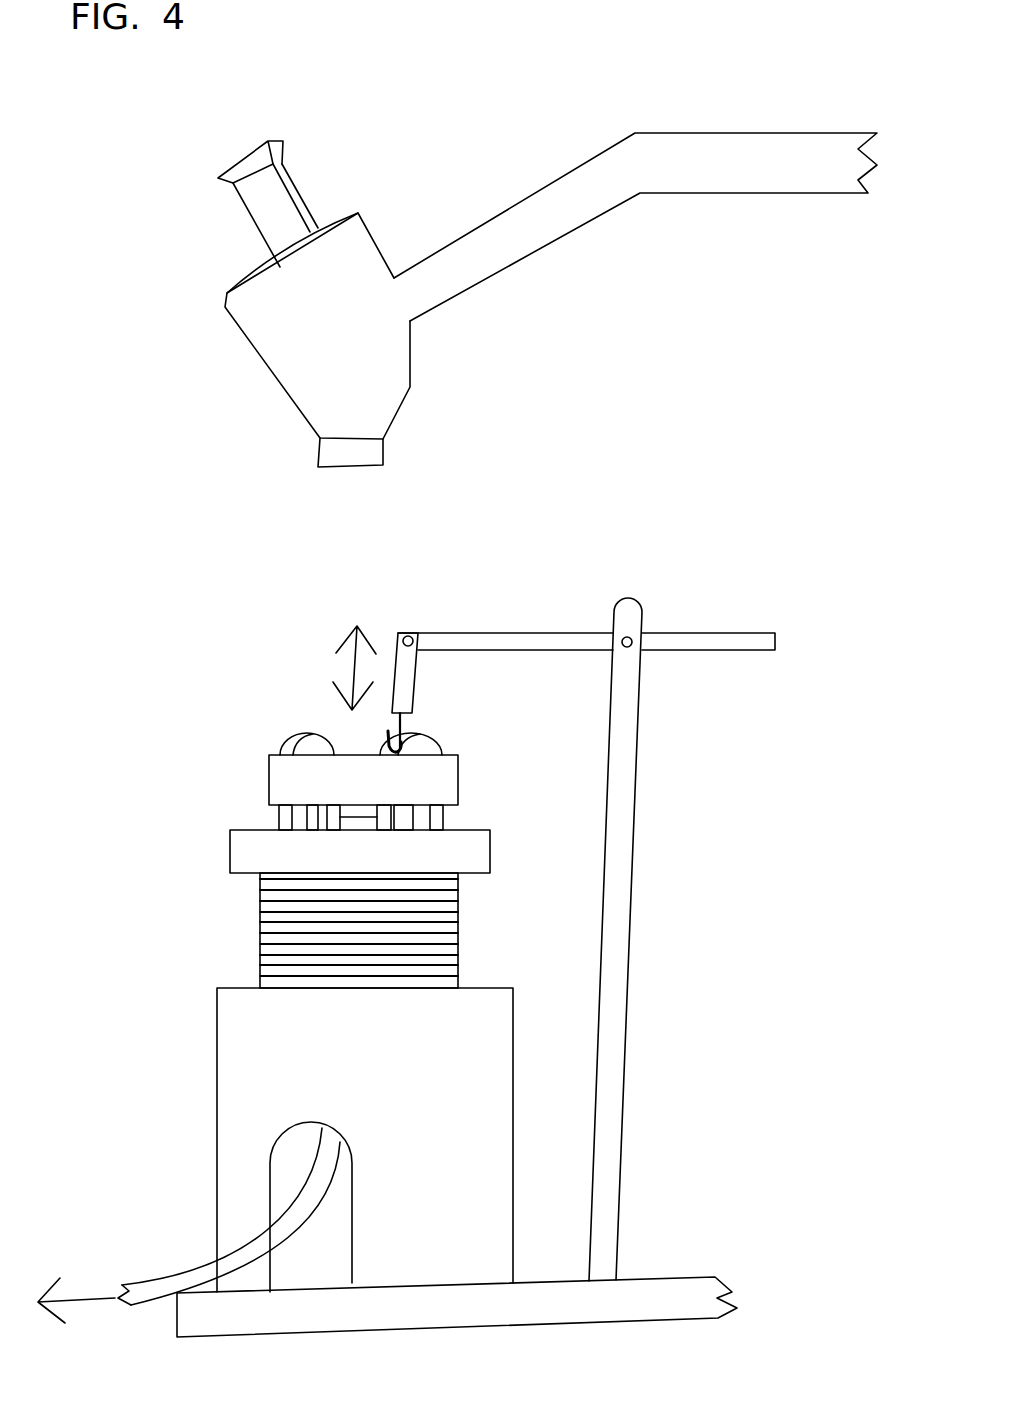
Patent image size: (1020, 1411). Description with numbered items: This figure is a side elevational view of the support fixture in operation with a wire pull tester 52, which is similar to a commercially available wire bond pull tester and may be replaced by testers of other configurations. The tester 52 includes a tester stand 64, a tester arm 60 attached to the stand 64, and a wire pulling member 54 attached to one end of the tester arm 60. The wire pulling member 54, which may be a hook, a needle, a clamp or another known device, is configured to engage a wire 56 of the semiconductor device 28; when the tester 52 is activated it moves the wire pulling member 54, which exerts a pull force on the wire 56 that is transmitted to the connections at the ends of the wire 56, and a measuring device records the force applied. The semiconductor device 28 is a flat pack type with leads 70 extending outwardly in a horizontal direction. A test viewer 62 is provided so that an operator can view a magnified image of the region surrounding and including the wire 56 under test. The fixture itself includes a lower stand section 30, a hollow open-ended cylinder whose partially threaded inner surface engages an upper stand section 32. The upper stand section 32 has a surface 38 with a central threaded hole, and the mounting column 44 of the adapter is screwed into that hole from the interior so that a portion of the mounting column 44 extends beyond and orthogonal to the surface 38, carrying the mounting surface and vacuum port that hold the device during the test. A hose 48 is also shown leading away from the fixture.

The test viewer 62 is at (412, 348).
The tester arm 60 is at (458, 633).
The wire pull tester 52 is at (640, 963).
The wire pulling member 54 is at (402, 723).
The wire 56 is at (425, 740).
The semiconductor device 28 is at (458, 782).
The leads 70 is at (452, 818).
The mounting column 44 is at (340, 820).
The surface 38 is at (230, 847).
The lower stand section 30 is at (258, 923).
The upper stand section 32 is at (217, 1097).
The hose 48 is at (173, 1273).
The tester stand 64 is at (655, 1277).